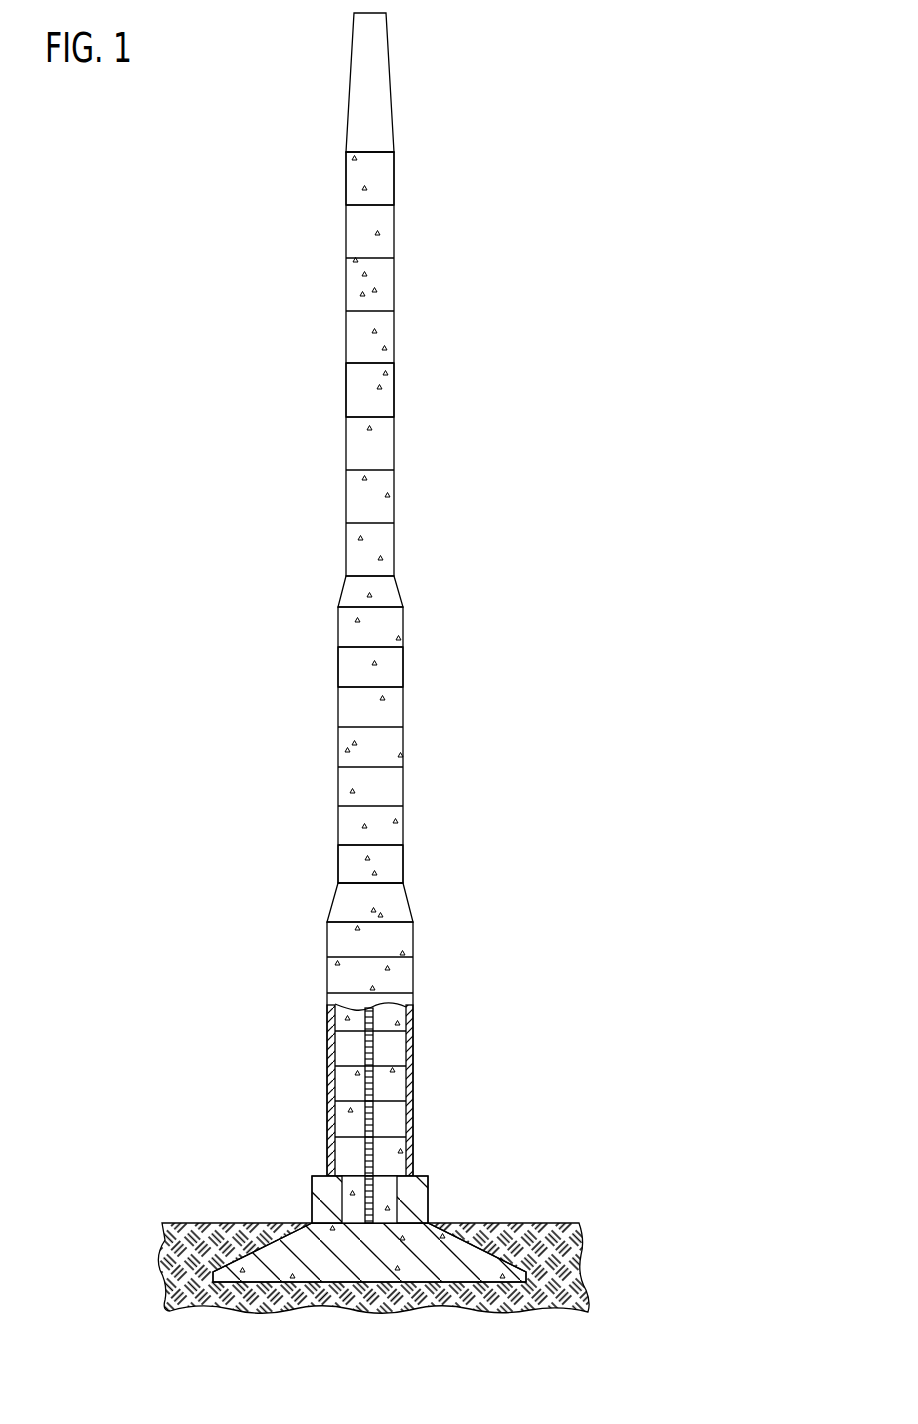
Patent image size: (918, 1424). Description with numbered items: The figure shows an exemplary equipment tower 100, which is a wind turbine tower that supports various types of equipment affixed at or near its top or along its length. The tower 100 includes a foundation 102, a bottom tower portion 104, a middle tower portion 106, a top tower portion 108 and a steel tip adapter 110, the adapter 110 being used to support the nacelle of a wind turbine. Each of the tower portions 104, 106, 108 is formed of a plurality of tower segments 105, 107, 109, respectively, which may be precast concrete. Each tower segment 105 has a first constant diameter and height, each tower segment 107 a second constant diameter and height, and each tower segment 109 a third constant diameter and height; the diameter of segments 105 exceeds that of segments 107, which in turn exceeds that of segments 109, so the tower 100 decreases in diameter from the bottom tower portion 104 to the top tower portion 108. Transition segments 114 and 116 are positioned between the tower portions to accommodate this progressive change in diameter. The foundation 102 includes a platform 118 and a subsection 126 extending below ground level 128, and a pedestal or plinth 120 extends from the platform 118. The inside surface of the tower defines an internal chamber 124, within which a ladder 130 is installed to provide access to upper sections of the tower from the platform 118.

The equipment tower 100 is at (282, 127).
The foundation 102 is at (488, 1138).
The bottom tower portion 104 is at (300, 1015).
The tower segment 105 is at (342, 941).
The middle tower portion 106 is at (310, 777).
The tower segment 107 is at (353, 673).
The top tower portion 108 is at (310, 335).
The tower segment 109 is at (357, 178).
The steel tip adapter 110 is at (390, 81).
The transition segment 114 is at (408, 903).
The transition segment 116 is at (401, 587).
The platform 118 is at (348, 1222).
The pedestal 120 is at (428, 1200).
The internal chamber 124 is at (390, 1119).
The subsection 126 is at (360, 1262).
The ground level 128 is at (540, 1222).
The ladder 130 is at (375, 1048).